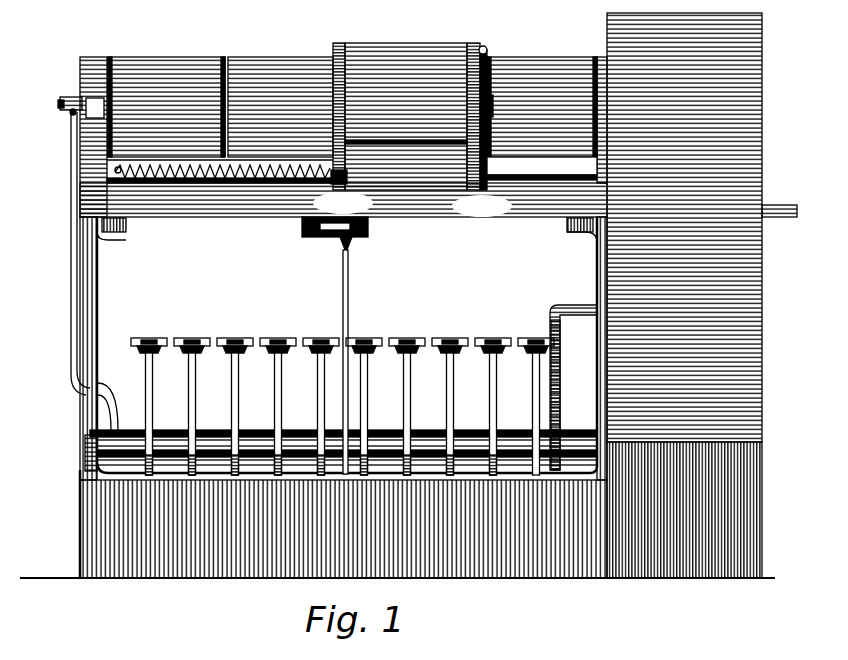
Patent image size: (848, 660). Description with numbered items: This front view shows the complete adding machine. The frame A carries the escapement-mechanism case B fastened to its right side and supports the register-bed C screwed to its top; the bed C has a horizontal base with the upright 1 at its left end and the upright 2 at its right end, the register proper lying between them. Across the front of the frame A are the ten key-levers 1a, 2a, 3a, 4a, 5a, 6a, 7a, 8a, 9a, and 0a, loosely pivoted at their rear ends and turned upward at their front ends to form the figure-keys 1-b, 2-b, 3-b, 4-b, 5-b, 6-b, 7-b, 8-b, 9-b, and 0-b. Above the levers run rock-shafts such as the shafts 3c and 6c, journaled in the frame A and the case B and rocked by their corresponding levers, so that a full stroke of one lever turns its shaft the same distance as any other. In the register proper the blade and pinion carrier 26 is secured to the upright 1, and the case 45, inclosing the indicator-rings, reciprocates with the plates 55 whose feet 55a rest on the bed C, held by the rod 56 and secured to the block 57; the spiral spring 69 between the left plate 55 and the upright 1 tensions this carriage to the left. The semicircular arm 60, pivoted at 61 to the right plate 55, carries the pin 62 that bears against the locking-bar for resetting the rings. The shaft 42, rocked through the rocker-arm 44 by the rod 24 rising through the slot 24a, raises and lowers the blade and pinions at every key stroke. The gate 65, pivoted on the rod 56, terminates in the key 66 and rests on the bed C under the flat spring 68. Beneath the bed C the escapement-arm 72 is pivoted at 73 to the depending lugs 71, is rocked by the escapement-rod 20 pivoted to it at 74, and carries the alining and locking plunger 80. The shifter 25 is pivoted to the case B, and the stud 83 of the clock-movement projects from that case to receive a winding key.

The upright 1 is at (100, 60).
The upright 2 is at (590, 56).
The blade and pinion carrier 26 is at (168, 62).
The case 45 is at (408, 48).
The plates 55 is at (338, 43).
The feet 55a is at (412, 204).
The pivot 61 is at (486, 52).
The semicircular arm 60 is at (500, 80).
The pin 62 is at (542, 168).
The stud 83 is at (786, 205).
The escapement-mechanism case B is at (762, 253).
The shaft 42 is at (62, 100).
The rocker-arm 44 is at (68, 113).
The locking-blade-actuating rod 24 is at (70, 282).
The slot 24a is at (76, 386).
The spiral spring 69 is at (152, 210).
The register-bed C is at (208, 205).
The key 66 is at (302, 182).
The flat spring 68 is at (308, 195).
The pivot 73 is at (368, 228).
The block 57 is at (446, 190).
The gate 65 is at (508, 210).
The rod 56 is at (545, 214).
The depending lugs 71 is at (300, 232).
The escapement-arm 72 is at (315, 240).
The alining and locking plunger 80 is at (330, 240).
The pivot 74 is at (344, 252).
The indicator-ring escapement-rod 20 is at (350, 284).
The shifter 25 is at (575, 305).
The frame A is at (596, 380).
The figure-key 1-b is at (142, 396).
The figure-key 2-b is at (192, 338).
The figure-key 3-b is at (229, 397).
The figure-key 4-b is at (278, 338).
The figure-key 5-b is at (317, 397).
The figure-key 6-b is at (368, 338).
The figure-key 7-b is at (405, 397).
The figure-key 8-b is at (455, 338).
The figure-key 9-b is at (490, 397).
The figure-key 0-b is at (538, 338).
The key-lever 1a is at (129, 425).
The key-lever 2a is at (176, 427).
The key-lever 3a is at (219, 427).
The key-lever 4a is at (262, 427).
The key-lever 5a is at (305, 427).
The key-lever 6a is at (378, 425).
The key-lever 7a is at (421, 427).
The key-lever 8a is at (464, 427).
The key-lever 9a is at (507, 427).
The key-lever 0a is at (515, 413).
The rock-shaft 6c is at (382, 413).
The rock-shaft 3c is at (428, 413).